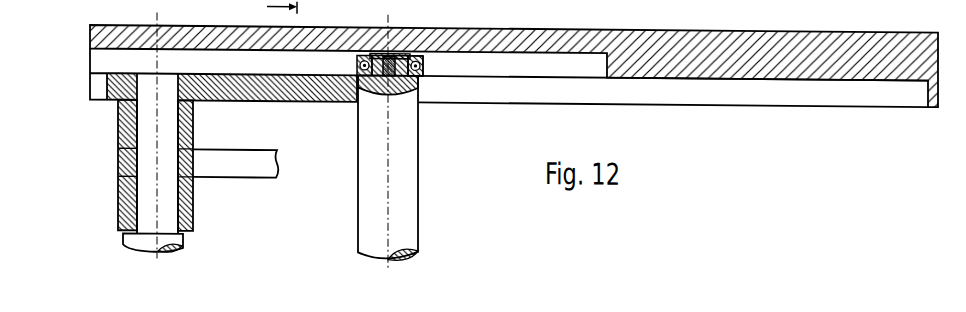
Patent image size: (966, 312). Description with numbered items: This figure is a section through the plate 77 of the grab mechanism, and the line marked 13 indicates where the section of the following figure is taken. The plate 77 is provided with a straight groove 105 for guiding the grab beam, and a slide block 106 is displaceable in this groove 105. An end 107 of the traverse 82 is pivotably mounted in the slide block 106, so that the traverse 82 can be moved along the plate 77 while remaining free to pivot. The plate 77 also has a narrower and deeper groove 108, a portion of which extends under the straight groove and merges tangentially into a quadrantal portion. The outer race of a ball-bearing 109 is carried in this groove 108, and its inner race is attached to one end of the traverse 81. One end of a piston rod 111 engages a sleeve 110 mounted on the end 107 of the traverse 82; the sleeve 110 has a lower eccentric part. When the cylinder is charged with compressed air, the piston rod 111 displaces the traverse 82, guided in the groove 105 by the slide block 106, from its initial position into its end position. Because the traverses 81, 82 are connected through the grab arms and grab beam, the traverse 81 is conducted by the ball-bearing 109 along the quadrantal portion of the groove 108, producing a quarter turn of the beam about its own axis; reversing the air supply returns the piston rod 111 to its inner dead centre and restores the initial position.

The plate 77 is at (662, 30).
The straight groove 105 is at (653, 90).
The slide block 106 is at (317, 86).
The end of the traverse 107 is at (163, 111).
The narrower and deeper groove 108 is at (447, 60).
The ball-bearing 109 is at (425, 67).
The sleeve 110 is at (118, 201).
The piston rod 111 is at (240, 178).
The traverse 81 is at (415, 209).
The traverse 82 is at (183, 243).
The section line 13 is at (269, 7).